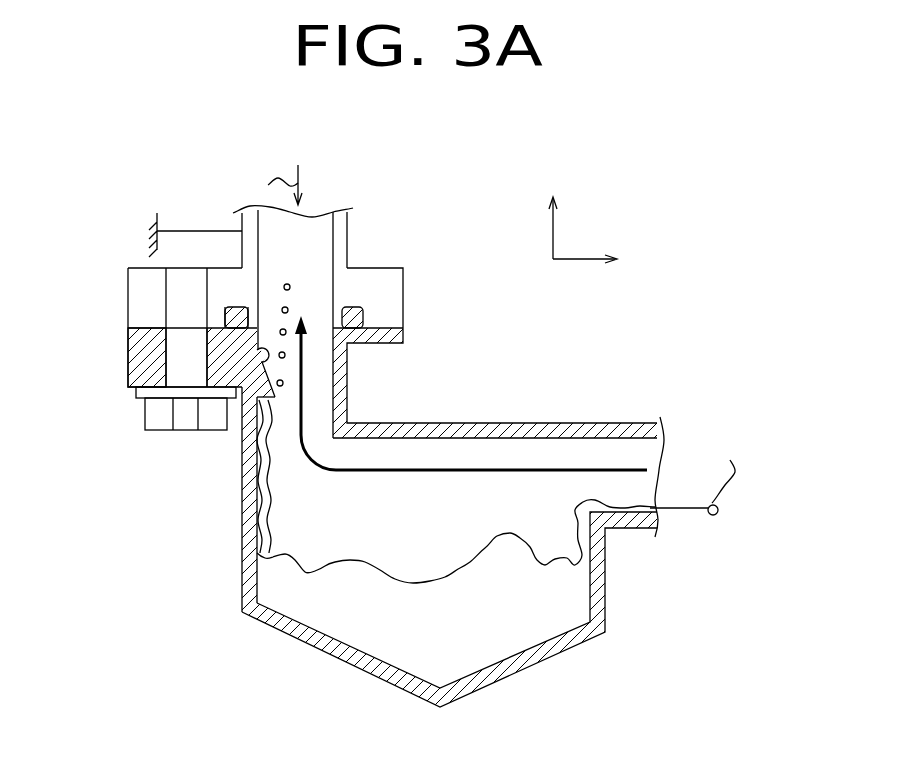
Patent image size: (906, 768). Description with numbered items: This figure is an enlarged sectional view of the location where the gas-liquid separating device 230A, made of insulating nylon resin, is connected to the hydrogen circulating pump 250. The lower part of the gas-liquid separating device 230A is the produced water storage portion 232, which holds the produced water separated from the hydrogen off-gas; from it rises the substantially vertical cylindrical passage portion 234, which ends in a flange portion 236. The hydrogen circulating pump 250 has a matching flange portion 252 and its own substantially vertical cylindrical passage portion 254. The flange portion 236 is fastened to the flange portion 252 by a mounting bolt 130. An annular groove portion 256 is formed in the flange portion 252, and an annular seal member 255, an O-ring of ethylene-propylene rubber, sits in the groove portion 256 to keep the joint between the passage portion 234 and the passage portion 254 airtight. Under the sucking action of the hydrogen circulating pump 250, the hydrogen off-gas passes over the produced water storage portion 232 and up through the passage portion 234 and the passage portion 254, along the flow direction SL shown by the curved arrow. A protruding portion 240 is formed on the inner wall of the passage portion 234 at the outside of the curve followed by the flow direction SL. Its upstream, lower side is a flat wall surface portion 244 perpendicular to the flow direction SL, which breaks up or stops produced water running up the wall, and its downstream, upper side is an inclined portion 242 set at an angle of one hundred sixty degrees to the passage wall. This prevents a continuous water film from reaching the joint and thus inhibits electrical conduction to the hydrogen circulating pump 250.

The gas-liquid separating device 230A is at (541, 390).
The hydrogen circulating pump 250 is at (414, 256).
The cylindrical passage portion 254 is at (261, 277).
The annular groove portion 256 is at (228, 303).
The annular seal member 255 is at (222, 303).
The flange portion 252 is at (128, 302).
The flange portion 236 is at (128, 358).
The inclined portion 242 is at (275, 372).
The wall surface portion 244 is at (272, 398).
The mounting bolt 130 is at (185, 433).
The produced water storage portion 232 is at (518, 670).
The cylindrical passage portion 234 is at (258, 478).
The protruding portion 240 is at (280, 417).
The flow direction SL is at (422, 472).